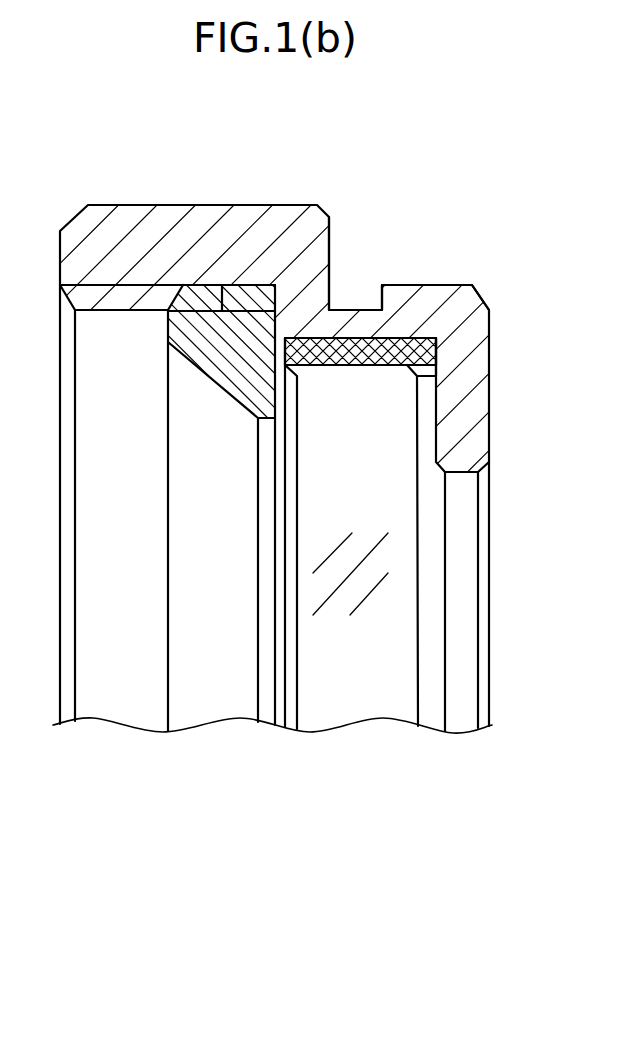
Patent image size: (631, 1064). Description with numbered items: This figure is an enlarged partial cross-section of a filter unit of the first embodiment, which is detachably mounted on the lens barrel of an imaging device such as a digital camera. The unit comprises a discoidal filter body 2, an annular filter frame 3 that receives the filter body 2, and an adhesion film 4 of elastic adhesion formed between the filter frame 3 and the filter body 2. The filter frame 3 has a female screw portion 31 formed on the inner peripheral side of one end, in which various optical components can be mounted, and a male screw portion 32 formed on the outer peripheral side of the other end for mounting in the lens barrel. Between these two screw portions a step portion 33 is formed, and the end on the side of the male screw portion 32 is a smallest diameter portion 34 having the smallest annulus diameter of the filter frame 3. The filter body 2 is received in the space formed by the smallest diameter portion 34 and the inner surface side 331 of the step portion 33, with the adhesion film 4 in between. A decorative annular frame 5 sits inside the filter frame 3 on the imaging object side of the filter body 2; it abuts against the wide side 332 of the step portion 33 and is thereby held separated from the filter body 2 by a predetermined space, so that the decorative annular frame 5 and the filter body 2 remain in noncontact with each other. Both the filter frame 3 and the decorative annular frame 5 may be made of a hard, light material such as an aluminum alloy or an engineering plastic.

The filter body 2 is at (383, 641).
The filter frame 3 is at (303, 204).
The female screw portion 31 is at (122, 300).
The male screw portion 32 is at (432, 298).
The step portion 33 is at (307, 298).
The inner surface side 331 is at (383, 339).
The wide side 332 is at (268, 297).
The smallest diameter portion 34 is at (462, 418).
The adhesion film 4 is at (358, 358).
The decorative annular frame 5 is at (217, 357).